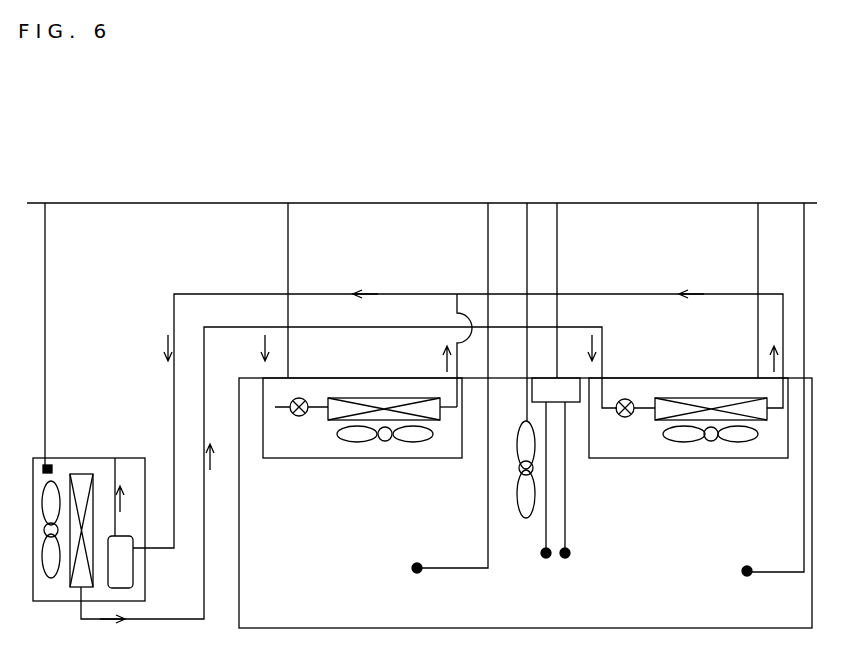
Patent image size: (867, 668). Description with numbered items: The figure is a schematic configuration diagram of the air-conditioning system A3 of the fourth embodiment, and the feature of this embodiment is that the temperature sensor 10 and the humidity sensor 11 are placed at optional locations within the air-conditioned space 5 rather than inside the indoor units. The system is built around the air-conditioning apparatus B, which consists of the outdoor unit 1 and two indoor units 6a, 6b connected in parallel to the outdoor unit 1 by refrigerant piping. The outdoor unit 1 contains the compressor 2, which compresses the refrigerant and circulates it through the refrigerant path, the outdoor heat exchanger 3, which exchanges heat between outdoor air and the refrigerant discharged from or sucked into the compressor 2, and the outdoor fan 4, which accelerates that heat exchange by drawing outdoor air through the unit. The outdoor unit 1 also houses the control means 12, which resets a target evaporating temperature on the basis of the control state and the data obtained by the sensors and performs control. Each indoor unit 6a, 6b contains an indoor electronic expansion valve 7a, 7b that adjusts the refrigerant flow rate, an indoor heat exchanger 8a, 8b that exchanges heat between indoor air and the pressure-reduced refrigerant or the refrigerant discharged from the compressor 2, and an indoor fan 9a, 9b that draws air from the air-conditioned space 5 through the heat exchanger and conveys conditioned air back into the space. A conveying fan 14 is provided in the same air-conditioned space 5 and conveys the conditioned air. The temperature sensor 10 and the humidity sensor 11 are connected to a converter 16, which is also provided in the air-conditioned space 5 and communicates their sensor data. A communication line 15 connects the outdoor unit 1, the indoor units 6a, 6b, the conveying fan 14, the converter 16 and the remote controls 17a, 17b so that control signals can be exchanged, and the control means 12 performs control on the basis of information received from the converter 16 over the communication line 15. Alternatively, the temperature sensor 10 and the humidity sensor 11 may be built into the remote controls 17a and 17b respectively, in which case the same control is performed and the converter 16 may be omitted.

The air-conditioning system A3 is at (141, 197).
The communication line 15 is at (261, 203).
The air-conditioning apparatus B is at (616, 289).
The outdoor unit 1 is at (137, 463).
The compressor 2 is at (134, 575).
The outdoor heat exchanger 3 is at (73, 472).
The outdoor fan 4 is at (33, 556).
The air-conditioned space 5 is at (241, 530).
The indoor unit 6a is at (311, 383).
The indoor unit 6b is at (636, 383).
The indoor electronic expansion valve 7a is at (298, 417).
The indoor electronic expansion valve 7b is at (623, 417).
The indoor heat exchanger 8a is at (327, 420).
The indoor heat exchanger 8b is at (655, 420).
The indoor fan 9a is at (385, 442).
The indoor fan 9b is at (710, 443).
The temperature sensor 10 is at (547, 559).
The humidity sensor 11 is at (566, 559).
The control means 12 is at (34, 480).
The conveying fan 14 is at (522, 516).
The converter 16 is at (569, 379).
The remote control 17a is at (416, 563).
The remote control 17b is at (746, 566).